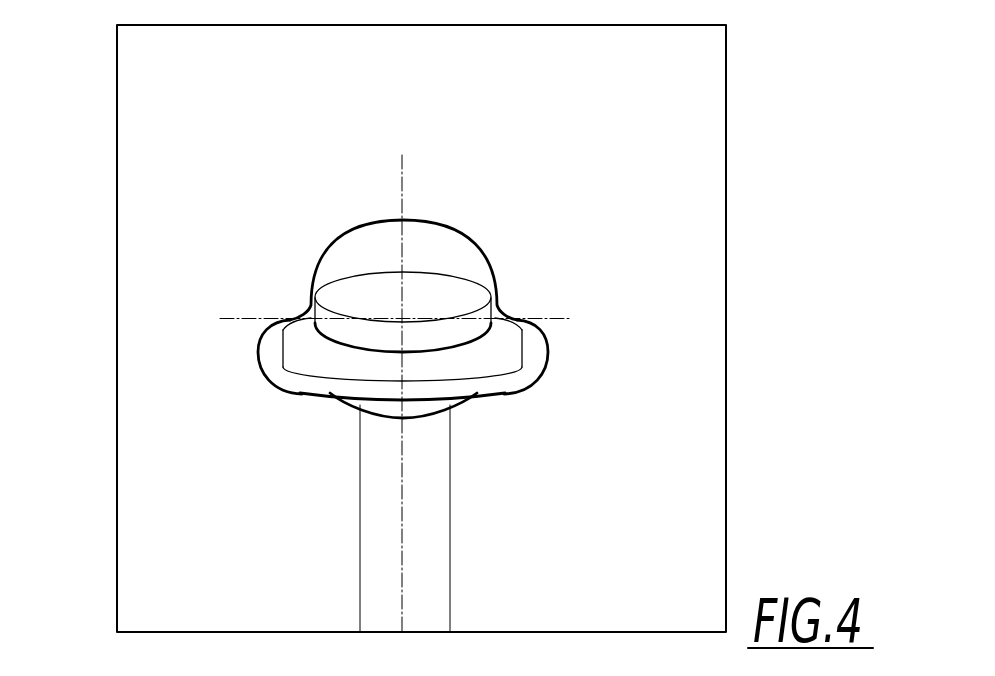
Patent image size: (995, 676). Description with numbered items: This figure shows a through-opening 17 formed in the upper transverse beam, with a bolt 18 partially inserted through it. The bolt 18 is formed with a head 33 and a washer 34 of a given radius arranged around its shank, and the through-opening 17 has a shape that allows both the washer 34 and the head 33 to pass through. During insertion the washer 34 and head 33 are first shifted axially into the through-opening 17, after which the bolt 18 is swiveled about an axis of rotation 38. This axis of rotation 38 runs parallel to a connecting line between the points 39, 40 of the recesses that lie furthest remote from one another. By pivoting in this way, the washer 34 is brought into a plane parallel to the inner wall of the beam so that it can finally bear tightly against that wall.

The through-opening 17 is at (427, 250).
The bolt 18 is at (423, 310).
The head 33 is at (460, 308).
The washer 34 is at (543, 350).
The axis of rotation 38 is at (233, 317).
The point of recess 39 is at (548, 368).
The point of recess 40 is at (258, 357).